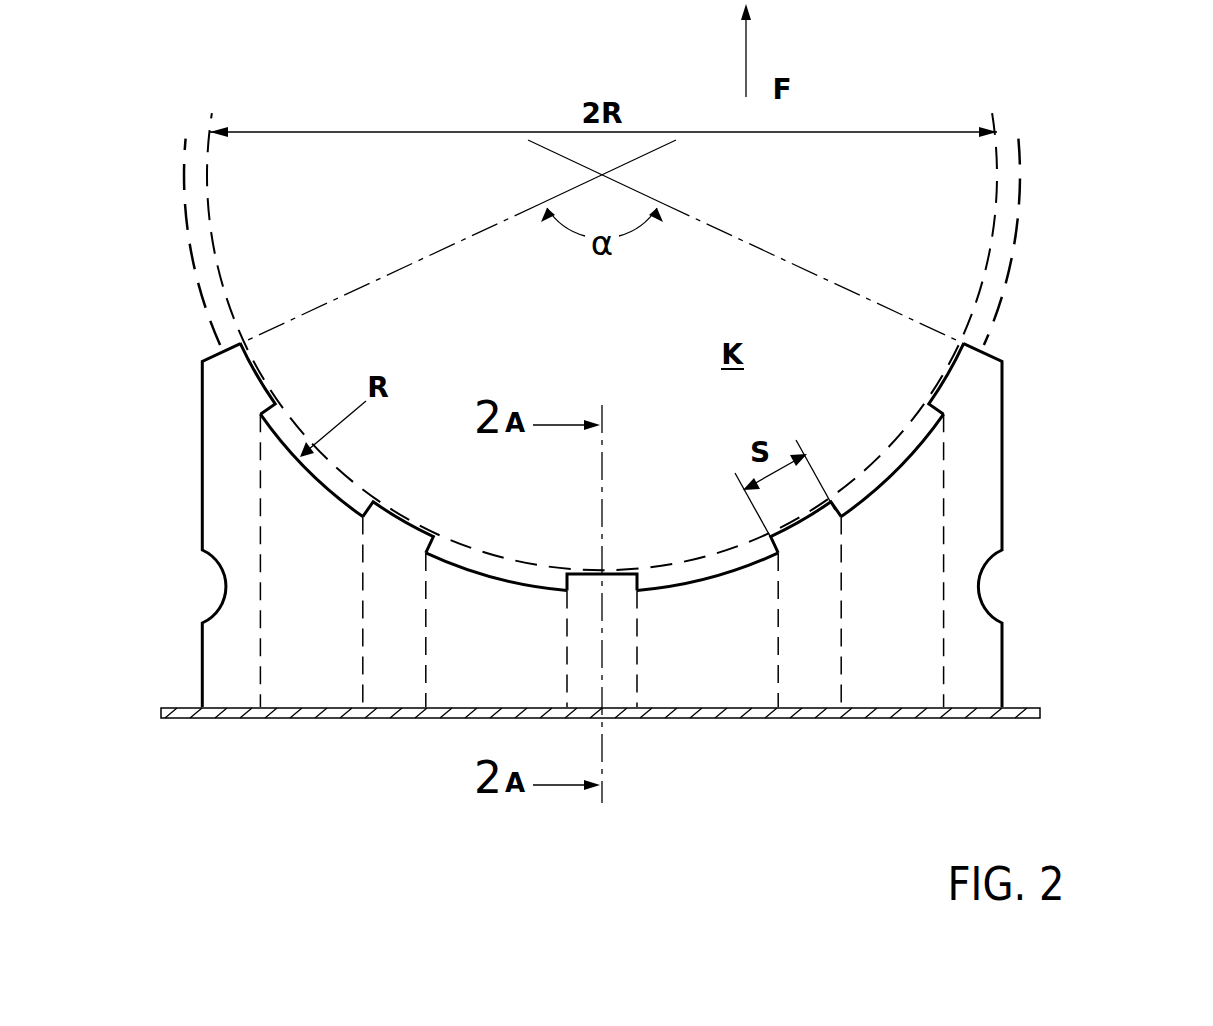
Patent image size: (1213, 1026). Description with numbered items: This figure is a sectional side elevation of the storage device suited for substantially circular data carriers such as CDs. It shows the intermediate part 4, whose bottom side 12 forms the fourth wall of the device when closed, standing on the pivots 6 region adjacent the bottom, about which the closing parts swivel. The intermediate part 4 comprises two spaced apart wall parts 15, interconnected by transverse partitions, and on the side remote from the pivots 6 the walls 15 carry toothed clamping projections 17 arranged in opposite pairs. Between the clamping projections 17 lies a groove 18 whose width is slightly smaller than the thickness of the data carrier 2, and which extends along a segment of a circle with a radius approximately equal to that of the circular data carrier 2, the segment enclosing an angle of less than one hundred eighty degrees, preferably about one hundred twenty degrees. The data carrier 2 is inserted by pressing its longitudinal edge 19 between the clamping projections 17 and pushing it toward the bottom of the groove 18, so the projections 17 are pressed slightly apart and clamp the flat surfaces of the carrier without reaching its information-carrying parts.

The data carrier 2 is at (815, 212).
The intermediate part 4 is at (974, 497).
The integrated pivots 6 is at (1040, 713).
The bottom side 12 is at (781, 730).
The wall parts 15 is at (330, 678).
The toothed clamping projections 17 is at (240, 365).
The groove 18 is at (514, 572).
The longitudinal edge 19 is at (990, 262).